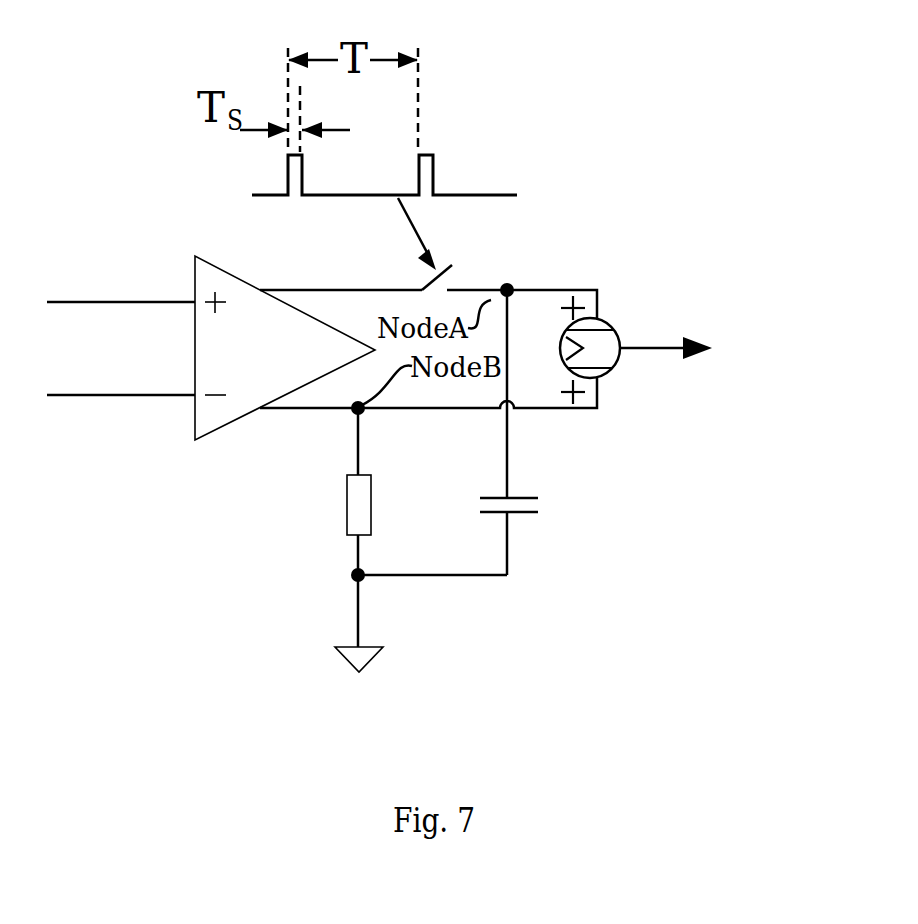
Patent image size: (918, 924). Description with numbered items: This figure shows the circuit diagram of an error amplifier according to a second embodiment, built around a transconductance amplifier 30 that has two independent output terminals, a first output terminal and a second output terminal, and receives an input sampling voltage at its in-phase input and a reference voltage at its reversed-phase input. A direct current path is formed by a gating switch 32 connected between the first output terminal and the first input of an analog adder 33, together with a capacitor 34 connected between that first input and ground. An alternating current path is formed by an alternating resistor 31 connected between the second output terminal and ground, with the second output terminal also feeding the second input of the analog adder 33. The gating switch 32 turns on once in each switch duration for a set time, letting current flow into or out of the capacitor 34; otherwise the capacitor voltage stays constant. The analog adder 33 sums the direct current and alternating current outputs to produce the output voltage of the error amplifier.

The transconductance amplifier 30 is at (180, 255).
The alternating resistor 31 is at (335, 505).
The gating switch 32 is at (477, 265).
The analog adder 33 is at (632, 337).
The capacitor 34 is at (480, 497).